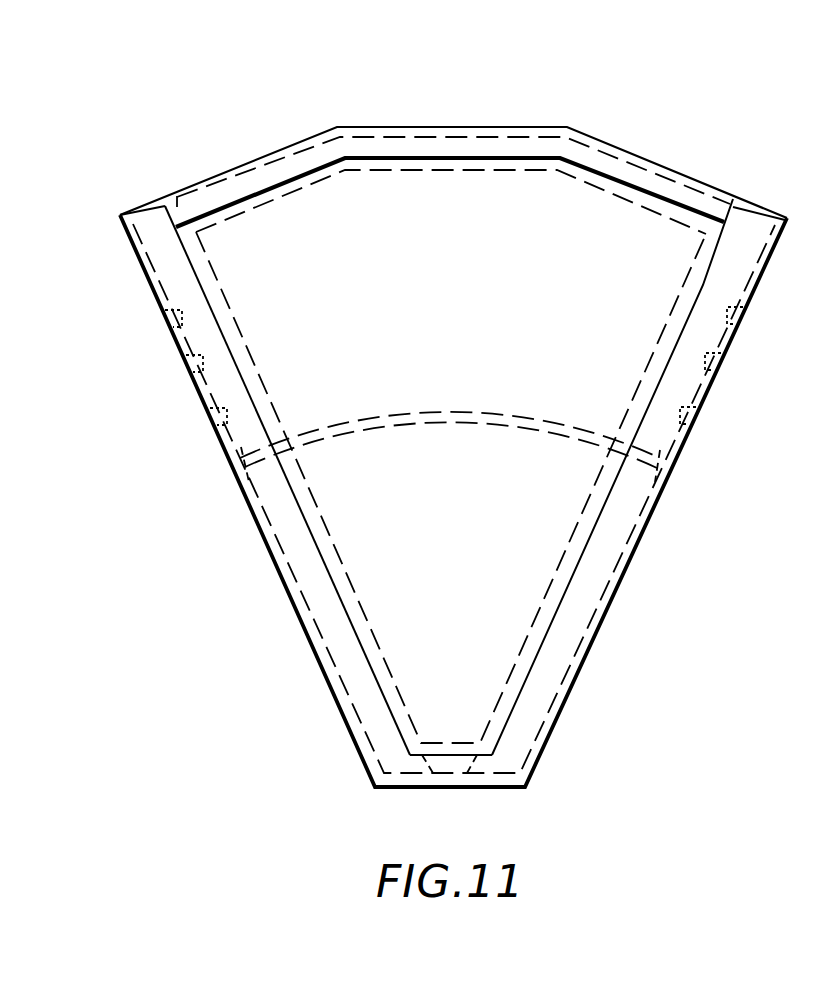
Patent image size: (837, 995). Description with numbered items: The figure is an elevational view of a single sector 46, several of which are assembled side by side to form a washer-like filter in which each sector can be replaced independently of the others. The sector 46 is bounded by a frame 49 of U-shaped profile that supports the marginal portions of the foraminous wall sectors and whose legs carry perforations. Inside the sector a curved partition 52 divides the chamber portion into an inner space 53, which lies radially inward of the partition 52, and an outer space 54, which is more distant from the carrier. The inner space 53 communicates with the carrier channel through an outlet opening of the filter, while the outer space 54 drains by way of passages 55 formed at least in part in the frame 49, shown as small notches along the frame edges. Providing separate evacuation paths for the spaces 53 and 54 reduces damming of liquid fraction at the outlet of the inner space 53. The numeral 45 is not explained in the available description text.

The sector 46 is at (648, 137).
The hull section 45 is at (478, 501).
The frame 49 is at (742, 252).
The outer space 54 is at (462, 253).
The inner space 53 is at (460, 569).
The partition 52 is at (503, 418).
The passages 55 is at (693, 415).